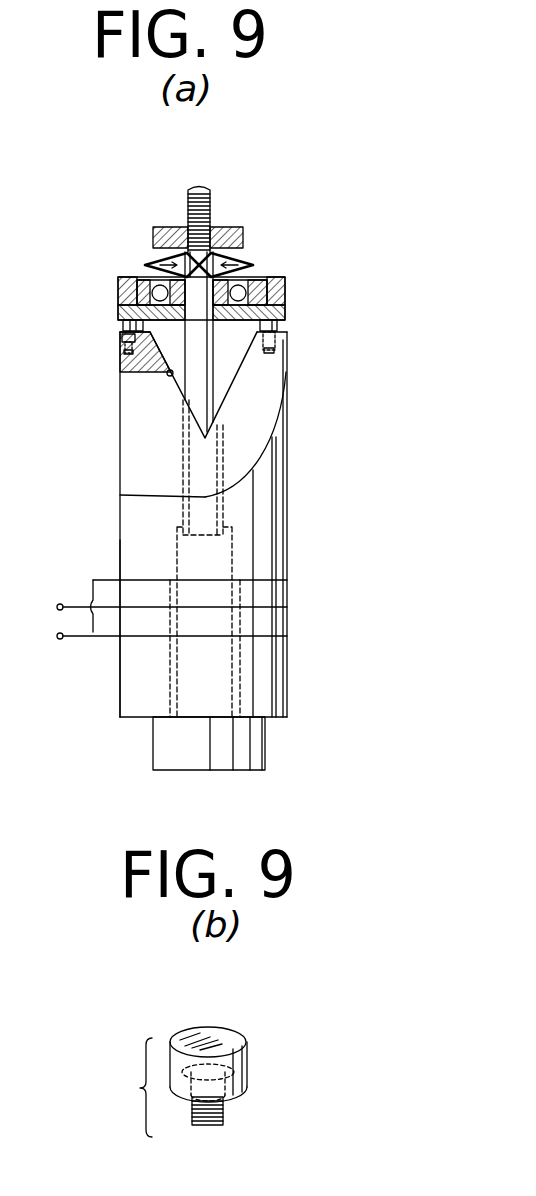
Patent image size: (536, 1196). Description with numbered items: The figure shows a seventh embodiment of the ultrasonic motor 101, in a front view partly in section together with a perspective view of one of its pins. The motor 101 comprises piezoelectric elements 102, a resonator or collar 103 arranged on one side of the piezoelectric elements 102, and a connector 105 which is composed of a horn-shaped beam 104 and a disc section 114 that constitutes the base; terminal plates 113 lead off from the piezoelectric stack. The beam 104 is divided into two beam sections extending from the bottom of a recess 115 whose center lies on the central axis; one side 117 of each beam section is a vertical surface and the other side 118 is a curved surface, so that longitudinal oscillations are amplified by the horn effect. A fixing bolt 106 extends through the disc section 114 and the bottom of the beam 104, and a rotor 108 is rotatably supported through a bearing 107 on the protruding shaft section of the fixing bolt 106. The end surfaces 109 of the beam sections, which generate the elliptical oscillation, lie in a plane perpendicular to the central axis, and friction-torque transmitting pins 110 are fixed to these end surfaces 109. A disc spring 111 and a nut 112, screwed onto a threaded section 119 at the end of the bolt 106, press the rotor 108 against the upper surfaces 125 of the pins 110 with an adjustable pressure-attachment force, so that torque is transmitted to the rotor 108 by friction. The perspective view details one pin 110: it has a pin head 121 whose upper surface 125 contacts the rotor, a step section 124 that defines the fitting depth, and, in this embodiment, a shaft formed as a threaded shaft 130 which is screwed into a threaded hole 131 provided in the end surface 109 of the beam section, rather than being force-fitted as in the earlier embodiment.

The ultrasonic motor 101 is at (313, 250).
The piezoelectric elements 102 is at (288, 590).
The resonator (collar) 103 is at (285, 678).
The beam 104 is at (143, 463).
The connector 105 is at (290, 503).
The fixing bolt 106 is at (207, 370).
The bearing 107 is at (252, 277).
The rotor 108 is at (286, 296).
The end surfaces of the beam 109 is at (276, 326).
The friction-torque transmitting pins 110 is at (123, 323).
In FIG. 9b, the friction-torque transmitting pins 110 is at (127, 1087).
The disc spring 111 is at (150, 263).
The nut 112 is at (168, 227).
The terminal plates 113 is at (98, 578).
The disc section 114 is at (125, 547).
The recess 115 is at (170, 372).
The vertical side of beam section 117 is at (135, 443).
The curved side of beam section 118 is at (258, 420).
The threaded section 119 is at (207, 187).
In FIG. 9b, the pin head 121 is at (250, 1057).
In FIG. 9b, the step section 124 is at (233, 1097).
In FIG. 9b, the upper surfaces of the pins 125 is at (212, 1033).
In FIG. 9b, the threaded shaft 130 is at (222, 1120).
The threaded hole 131 is at (122, 340).